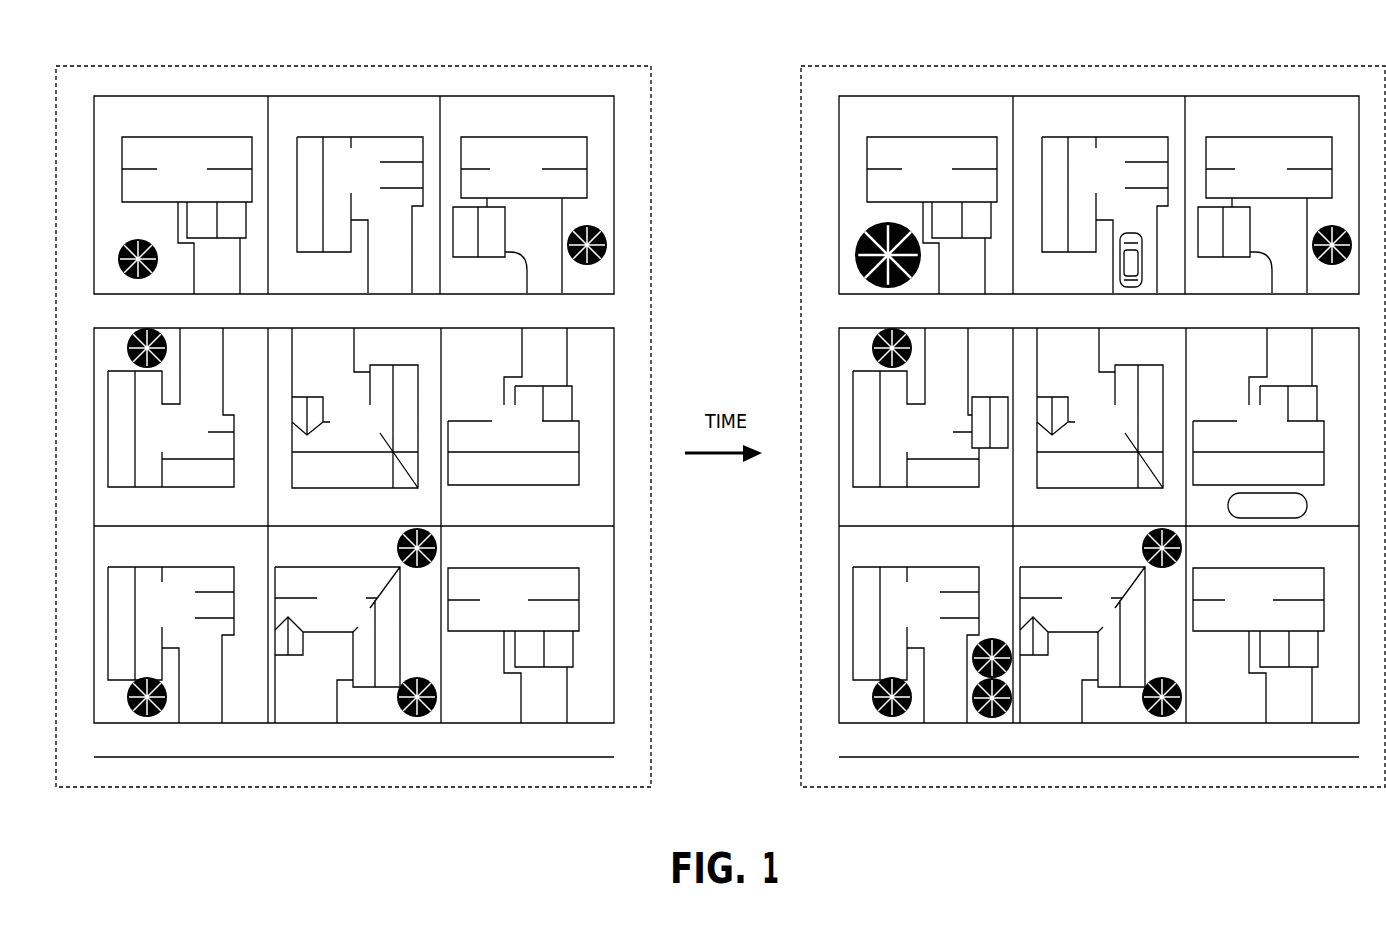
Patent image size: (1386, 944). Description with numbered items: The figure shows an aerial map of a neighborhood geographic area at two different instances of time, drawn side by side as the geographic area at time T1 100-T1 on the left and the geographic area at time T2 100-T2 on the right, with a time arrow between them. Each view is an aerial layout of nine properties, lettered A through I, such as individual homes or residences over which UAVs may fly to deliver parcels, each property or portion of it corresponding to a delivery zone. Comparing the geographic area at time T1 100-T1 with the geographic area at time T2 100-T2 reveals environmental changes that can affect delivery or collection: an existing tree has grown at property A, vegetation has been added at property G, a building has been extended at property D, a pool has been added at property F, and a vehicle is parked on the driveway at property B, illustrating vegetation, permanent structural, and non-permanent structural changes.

The geographic area at time T1 100-T1 is at (95, 46).
The geographic area at time T2 100-T2 is at (840, 46).